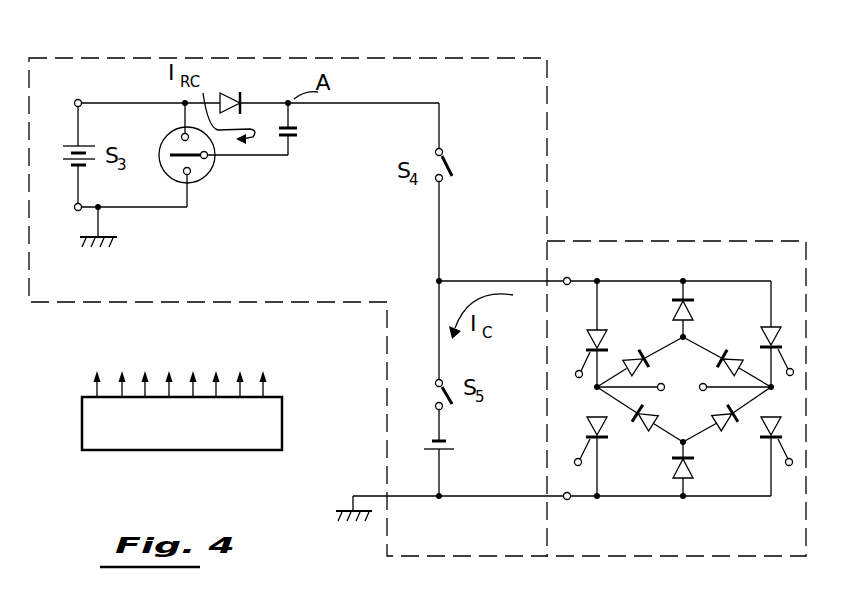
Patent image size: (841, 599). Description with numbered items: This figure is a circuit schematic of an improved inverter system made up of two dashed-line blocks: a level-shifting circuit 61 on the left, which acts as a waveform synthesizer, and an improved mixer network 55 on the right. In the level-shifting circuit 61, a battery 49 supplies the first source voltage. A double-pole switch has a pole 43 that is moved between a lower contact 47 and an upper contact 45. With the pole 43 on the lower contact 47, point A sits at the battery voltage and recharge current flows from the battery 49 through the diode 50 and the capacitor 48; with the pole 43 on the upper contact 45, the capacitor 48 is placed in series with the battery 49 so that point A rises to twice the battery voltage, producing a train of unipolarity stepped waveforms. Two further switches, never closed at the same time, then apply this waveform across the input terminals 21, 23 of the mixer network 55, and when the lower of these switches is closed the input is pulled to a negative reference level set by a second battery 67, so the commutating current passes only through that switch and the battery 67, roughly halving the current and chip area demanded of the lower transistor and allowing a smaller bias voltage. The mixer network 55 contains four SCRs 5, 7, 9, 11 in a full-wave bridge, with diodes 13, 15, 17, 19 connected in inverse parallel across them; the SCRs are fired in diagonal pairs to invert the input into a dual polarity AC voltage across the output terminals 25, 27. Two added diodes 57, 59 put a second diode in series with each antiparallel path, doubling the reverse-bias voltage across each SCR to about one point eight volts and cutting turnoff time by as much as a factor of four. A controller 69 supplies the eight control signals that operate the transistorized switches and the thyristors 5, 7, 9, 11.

The level-shifting circuit 61 is at (144, 70).
The improved mixer network 55 is at (672, 252).
The battery 49 is at (97, 150).
The upper contact 45 is at (177, 134).
The pole 43 is at (207, 160).
The lower contact 47 is at (191, 175).
The diode 50 is at (243, 95).
The capacitor 48 is at (297, 139).
The battery 67 is at (456, 437).
The input terminal 21 is at (571, 278).
The input terminal 23 is at (570, 499).
The SCR 5 is at (590, 332).
The SCR 7 is at (589, 419).
The SCR 9 is at (777, 328).
The SCR 11 is at (778, 421).
The diode 13 is at (639, 350).
The diode 15 is at (632, 421).
The diode 17 is at (727, 350).
The diode 19 is at (738, 422).
The diode 57 is at (695, 301).
The diode 59 is at (674, 470).
The output terminal 25 is at (664, 384).
The output terminal 27 is at (700, 390).
The controller 69 is at (283, 425).